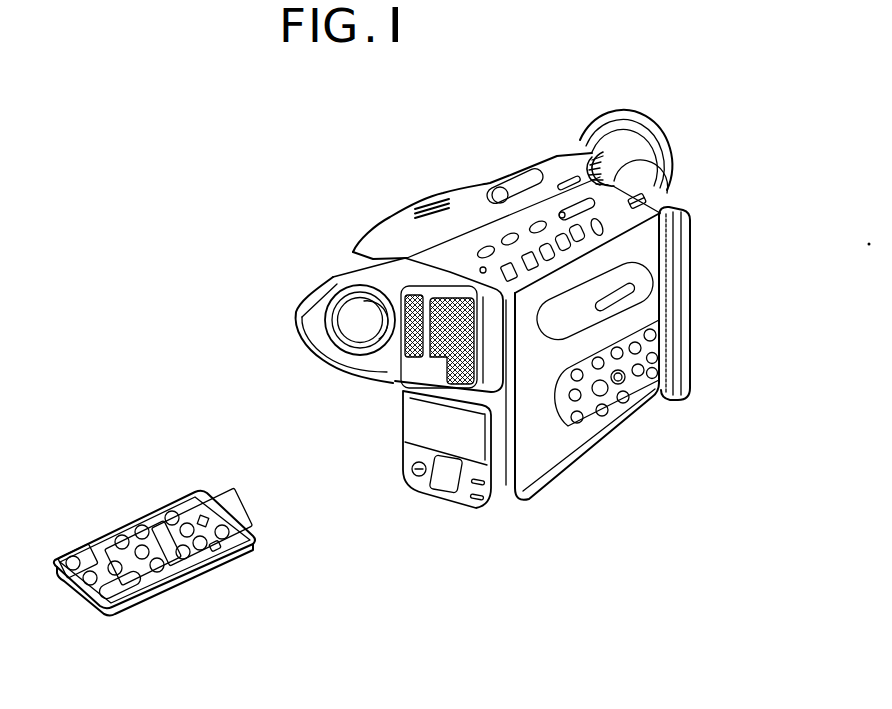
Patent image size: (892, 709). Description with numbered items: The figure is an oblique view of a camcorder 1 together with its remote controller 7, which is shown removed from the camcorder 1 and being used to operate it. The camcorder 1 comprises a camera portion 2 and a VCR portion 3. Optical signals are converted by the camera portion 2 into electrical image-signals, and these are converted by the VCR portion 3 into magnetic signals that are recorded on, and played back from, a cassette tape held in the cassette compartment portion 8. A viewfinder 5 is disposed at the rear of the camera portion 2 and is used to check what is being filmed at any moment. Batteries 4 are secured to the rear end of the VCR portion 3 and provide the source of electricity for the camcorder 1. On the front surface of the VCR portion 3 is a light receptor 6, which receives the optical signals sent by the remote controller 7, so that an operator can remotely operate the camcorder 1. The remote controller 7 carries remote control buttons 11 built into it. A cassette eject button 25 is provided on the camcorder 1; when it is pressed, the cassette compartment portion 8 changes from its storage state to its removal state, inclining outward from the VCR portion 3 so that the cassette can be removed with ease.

The camcorder 1 is at (537, 163).
The camera portion 2 is at (443, 232).
The VCR portion 3 is at (512, 498).
The batteries 4 is at (694, 300).
The viewfinder 5 is at (655, 143).
The cassette eject button 25 is at (655, 170).
The light receptor 6 is at (450, 486).
The remote controller 7 is at (172, 547).
The cassette compartment portion 8 is at (625, 410).
The remote control button 11 is at (213, 627).